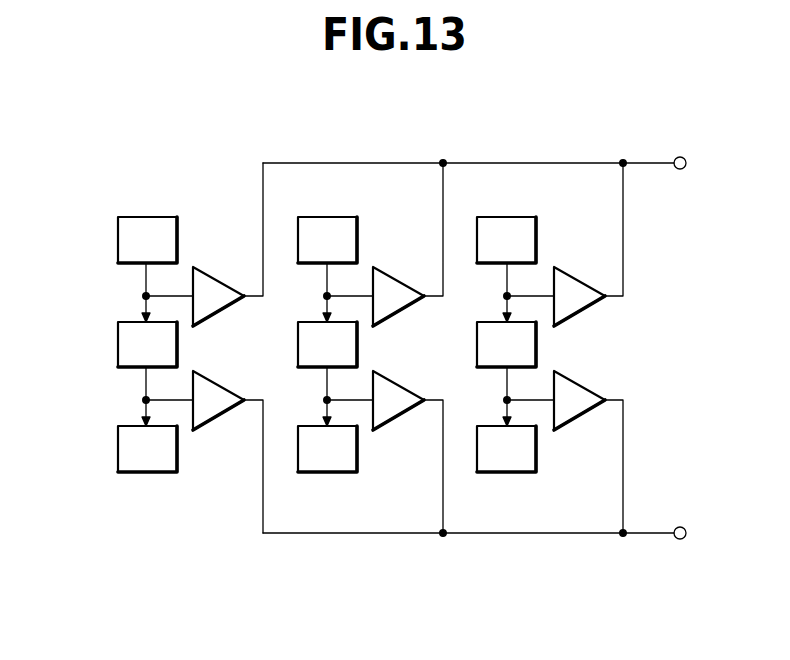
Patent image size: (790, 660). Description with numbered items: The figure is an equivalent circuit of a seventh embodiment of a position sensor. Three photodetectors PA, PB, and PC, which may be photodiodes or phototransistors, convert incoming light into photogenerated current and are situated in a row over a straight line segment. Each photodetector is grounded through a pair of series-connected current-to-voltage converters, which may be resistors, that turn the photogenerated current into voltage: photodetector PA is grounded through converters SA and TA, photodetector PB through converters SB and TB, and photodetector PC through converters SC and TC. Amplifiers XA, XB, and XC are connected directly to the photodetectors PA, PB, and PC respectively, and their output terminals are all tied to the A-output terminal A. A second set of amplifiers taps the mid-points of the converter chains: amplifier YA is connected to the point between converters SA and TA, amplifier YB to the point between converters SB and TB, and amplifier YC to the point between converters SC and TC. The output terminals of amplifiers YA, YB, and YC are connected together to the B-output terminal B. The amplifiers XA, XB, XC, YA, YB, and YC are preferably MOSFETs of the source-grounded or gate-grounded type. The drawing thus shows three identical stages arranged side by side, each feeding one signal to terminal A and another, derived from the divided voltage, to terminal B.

The photodetector PA is at (118, 222).
The current-to-voltage converter SA is at (118, 327).
The current-to-voltage converter TA is at (118, 432).
The amplifier XA is at (208, 273).
The amplifier YA is at (220, 418).
The photodetector PB is at (343, 217).
The current-to-voltage converter SB is at (298, 346).
The current-to-voltage converter TB is at (340, 472).
The amplifier XB is at (389, 273).
The amplifier YB is at (400, 418).
The photodetector PC is at (523, 217).
The current-to-voltage converter SC is at (477, 346).
The current-to-voltage converter TC is at (520, 472).
The amplifier XC is at (569, 273).
The amplifier YC is at (580, 418).
The A-output terminal A is at (691, 164).
The B-output terminal B is at (691, 534).